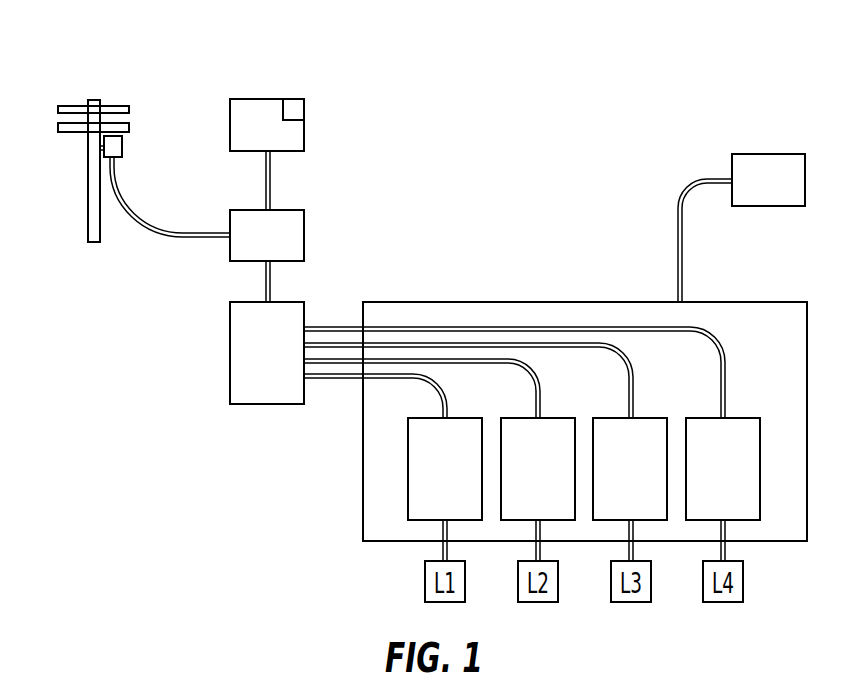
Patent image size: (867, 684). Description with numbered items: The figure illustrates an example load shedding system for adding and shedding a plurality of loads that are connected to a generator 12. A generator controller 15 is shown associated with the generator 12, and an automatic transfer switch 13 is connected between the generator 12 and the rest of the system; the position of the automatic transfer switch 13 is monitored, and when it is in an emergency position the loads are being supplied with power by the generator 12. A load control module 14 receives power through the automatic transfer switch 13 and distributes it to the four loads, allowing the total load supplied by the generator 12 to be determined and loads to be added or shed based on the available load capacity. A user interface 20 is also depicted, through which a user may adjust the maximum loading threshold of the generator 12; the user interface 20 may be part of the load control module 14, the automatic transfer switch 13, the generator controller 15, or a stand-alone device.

The generator 12 is at (267, 98).
The automatic transfer switch 13 is at (247, 209).
The load control module 14 is at (585, 301).
The generator controller 15 is at (297, 112).
The user interface 20 is at (769, 153).